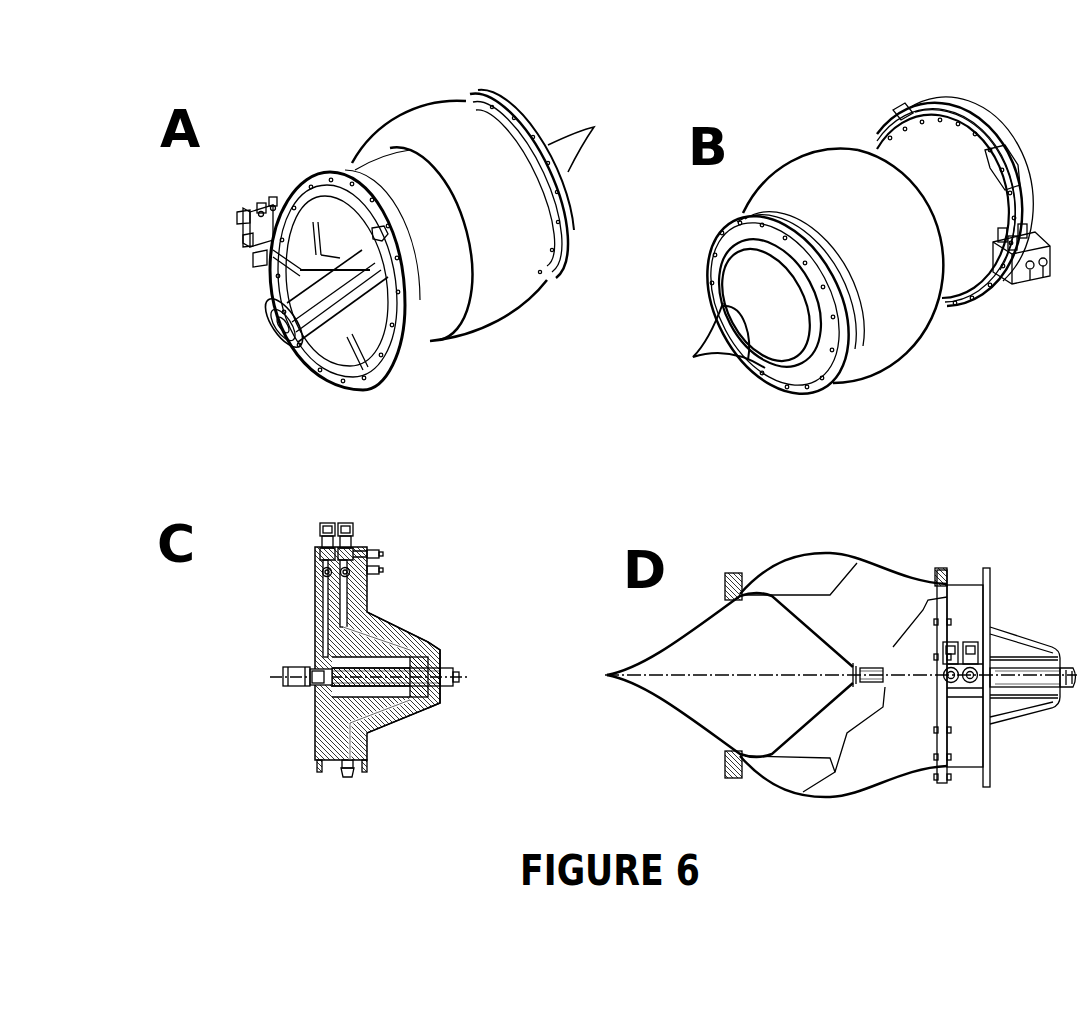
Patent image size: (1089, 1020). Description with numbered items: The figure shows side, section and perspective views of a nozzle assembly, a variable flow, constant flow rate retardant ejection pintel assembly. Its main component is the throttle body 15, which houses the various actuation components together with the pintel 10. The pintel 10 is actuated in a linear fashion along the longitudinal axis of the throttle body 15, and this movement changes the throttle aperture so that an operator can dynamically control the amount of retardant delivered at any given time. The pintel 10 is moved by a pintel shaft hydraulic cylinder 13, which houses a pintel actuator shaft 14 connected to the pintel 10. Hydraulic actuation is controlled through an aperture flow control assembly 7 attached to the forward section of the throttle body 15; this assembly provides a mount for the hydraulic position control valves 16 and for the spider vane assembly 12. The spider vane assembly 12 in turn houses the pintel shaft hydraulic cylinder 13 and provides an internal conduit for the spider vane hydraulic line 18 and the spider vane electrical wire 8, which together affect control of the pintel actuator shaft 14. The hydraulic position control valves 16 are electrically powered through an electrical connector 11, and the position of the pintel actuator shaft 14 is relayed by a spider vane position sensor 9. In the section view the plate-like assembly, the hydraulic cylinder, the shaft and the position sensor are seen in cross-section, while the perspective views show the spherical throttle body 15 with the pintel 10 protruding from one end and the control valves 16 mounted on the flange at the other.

In FIG. 6B, the aperture flow control assembly 7 is at (935, 123).
In FIG. 6D, the aperture flow control assembly 7 is at (969, 613).
In FIG. 6C, the spider vane electrical wire 8 is at (412, 710).
In FIG. 6C, the spider vane position sensor 9 is at (433, 707).
In FIG. 6A, the pintel 10 is at (570, 143).
In FIG. 6B, the pintel 10 is at (770, 337).
In FIG. 6D, the pintel 10 is at (683, 686).
In FIG. 6A, the electrical connector 11 is at (376, 226).
In FIG. 6C, the electrical connector 11 is at (347, 777).
In FIG. 6A, the spider vane assembly 12 is at (303, 258).
In FIG. 6C, the spider vane assembly 12 is at (433, 650).
In FIG. 6D, the spider vane assembly 12 is at (1035, 700).
In FIG. 6C, the pintel shaft hydraulic cylinder 13 is at (382, 667).
In FIG. 6C, the pintel actuator shaft 14 is at (295, 668).
In FIG. 6D, the pintel actuator shaft 14 is at (875, 668).
In FIG. 6A, the throttle body 15 is at (449, 221).
In FIG. 6B, the throttle body 15 is at (843, 185).
In FIG. 6D, the throttle body 15 is at (888, 733).
In FIG. 6A, the hydraulic position control valves 16 is at (262, 201).
In FIG. 6B, the hydraulic position control valves 16 is at (1035, 280).
In FIG. 6C, the hydraulic position control valves 16 is at (328, 532).
In FIG. 6D, the hydraulic position control valves 16 is at (968, 683).
In FIG. 6C, the spider vane hydraulic line 18 is at (317, 587).